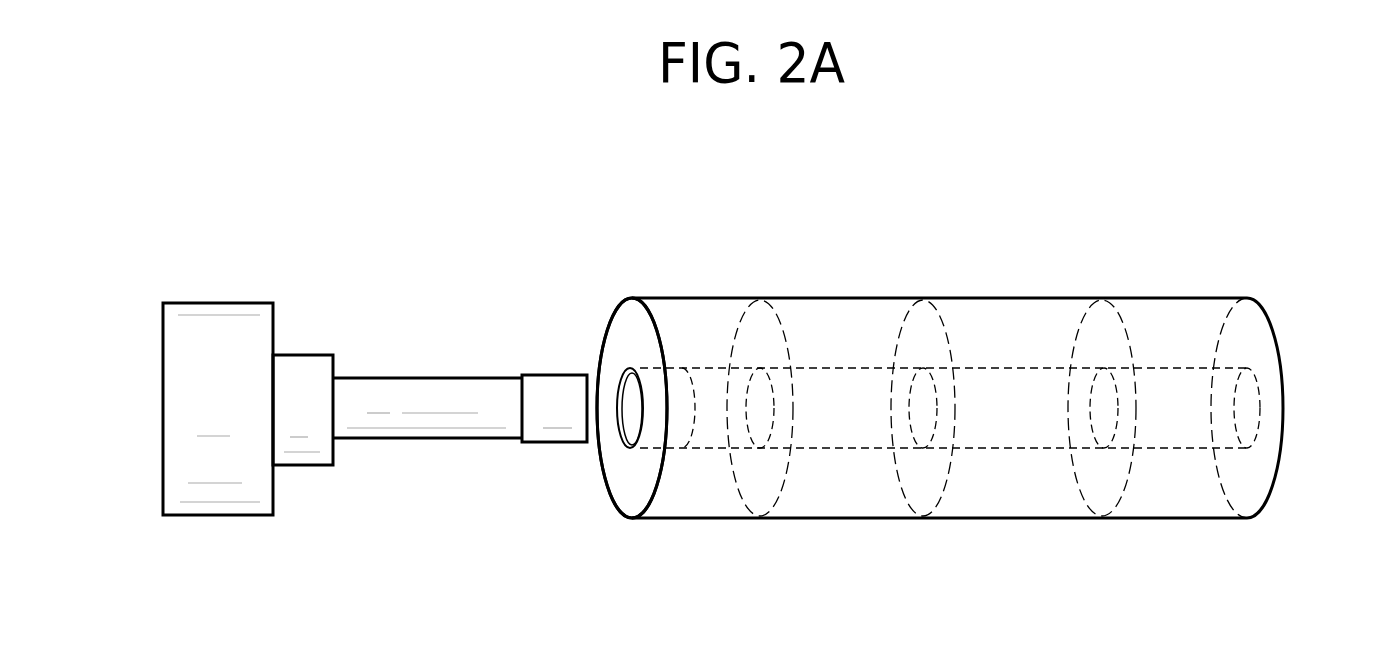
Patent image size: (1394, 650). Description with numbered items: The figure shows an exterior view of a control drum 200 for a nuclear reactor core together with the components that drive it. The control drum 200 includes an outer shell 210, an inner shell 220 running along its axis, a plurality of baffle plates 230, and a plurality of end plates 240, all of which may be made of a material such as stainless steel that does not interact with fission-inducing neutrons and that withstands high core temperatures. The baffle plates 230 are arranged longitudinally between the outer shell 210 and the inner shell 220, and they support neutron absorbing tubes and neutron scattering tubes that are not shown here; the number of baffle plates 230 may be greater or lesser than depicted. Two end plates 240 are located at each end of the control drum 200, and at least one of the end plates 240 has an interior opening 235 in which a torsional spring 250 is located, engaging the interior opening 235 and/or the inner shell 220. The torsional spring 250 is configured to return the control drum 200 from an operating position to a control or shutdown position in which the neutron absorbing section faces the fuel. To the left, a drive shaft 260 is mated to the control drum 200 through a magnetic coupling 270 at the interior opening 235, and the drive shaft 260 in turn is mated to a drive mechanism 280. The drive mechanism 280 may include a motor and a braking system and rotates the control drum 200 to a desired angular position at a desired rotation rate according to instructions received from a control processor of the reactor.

The control drum 200 is at (690, 243).
The outer shell 210 is at (1153, 298).
The inner shell 220 is at (1018, 449).
The baffle plates 230 is at (1092, 312).
The interior opening 235 is at (635, 450).
The end plates 240 is at (630, 337).
The torsional spring 250 is at (676, 432).
The drive shaft 260 is at (445, 440).
The magnetic coupling 270 is at (550, 445).
The drive mechanism 280 is at (226, 516).